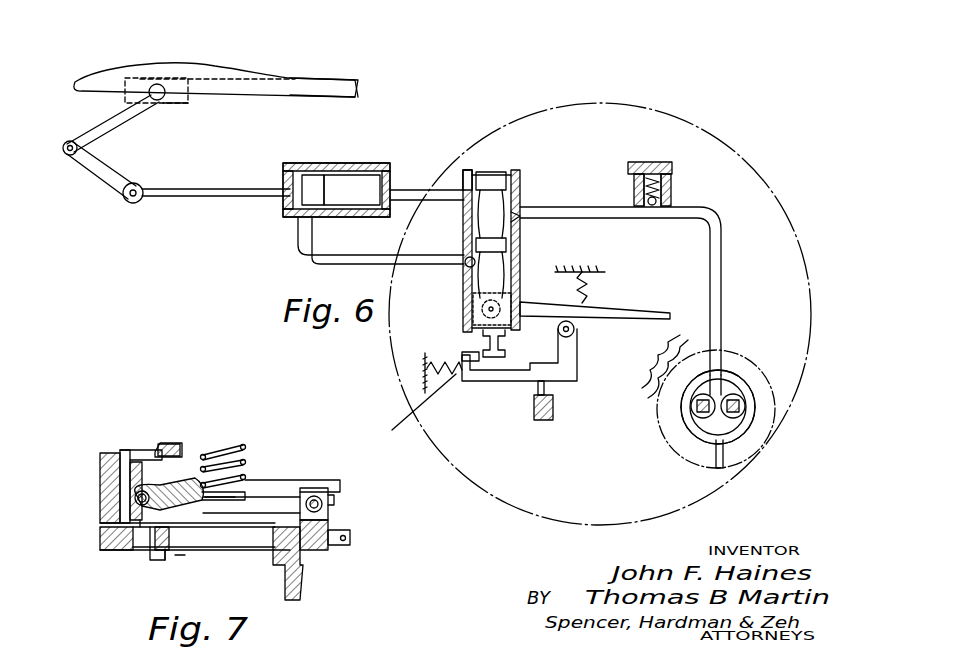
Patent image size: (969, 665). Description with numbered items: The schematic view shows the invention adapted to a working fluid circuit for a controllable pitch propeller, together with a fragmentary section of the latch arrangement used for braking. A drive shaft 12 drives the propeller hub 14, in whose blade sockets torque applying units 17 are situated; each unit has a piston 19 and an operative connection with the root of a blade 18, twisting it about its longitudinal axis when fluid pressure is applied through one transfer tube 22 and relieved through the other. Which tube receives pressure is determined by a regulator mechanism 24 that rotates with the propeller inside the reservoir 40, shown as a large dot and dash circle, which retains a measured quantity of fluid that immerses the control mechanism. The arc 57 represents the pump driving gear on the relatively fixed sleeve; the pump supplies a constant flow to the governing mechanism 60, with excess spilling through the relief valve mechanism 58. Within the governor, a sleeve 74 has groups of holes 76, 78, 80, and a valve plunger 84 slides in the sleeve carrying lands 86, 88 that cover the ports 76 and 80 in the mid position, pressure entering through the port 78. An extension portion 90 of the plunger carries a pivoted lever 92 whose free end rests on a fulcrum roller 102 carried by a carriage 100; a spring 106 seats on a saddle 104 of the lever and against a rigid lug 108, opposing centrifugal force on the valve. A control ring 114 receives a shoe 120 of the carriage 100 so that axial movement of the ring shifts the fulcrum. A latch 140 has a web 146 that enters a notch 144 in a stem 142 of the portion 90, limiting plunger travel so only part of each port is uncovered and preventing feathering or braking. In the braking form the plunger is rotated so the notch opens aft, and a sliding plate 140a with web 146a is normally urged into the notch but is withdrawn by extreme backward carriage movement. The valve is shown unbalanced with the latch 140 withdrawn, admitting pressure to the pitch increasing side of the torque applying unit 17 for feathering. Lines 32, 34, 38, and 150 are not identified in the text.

In FIG. 6, the drive shaft 12 is at (325, 80).
In FIG. 6, the propeller hub 14 is at (164, 104).
In FIG. 7, the propeller hub 14 is at (345, 525).
In FIG. 6, the torque applying unit 17 is at (360, 164).
In FIG. 6, the blade 18 is at (105, 80).
In FIG. 6, the piston 19 is at (316, 178).
In FIG. 6, the transfer tube 22 is at (408, 190).
In FIG. 6, the regulator mechanism 24 is at (795, 225).
In FIG. 6, the conduit 32 is at (435, 264).
In FIG. 6, the conduit 34 is at (437, 200).
In FIG. 7, the rod 38 is at (247, 548).
In FIG. 6, the reservoir 40 is at (712, 150).
In FIG. 6, the toothed flange 57 is at (676, 336).
In FIG. 6, the pressure relief means 58 is at (678, 196).
In FIG. 6, the pressure distributing means 60 is at (620, 291).
In FIG. 6, the sleeve 74 is at (520, 176).
In FIG. 6, the ports 76 is at (465, 280).
In FIG. 6, the ports 78 is at (520, 226).
In FIG. 6, the ports 80 is at (484, 180).
In FIG. 6, the valve plunger 84 is at (521, 200).
In FIG. 7, the valve plunger 84 is at (143, 455).
In FIG. 6, the land 86 is at (475, 245).
In FIG. 6, the land 88 is at (505, 172).
In FIG. 6, the portion 90 is at (514, 300).
In FIG. 6, the lever 92 is at (660, 313).
In FIG. 6, the carriage 100 is at (573, 382).
In FIG. 7, the carriage 100 is at (305, 565).
In FIG. 6, the fulcrum roller 102 is at (575, 331).
In FIG. 7, the saddle 104 is at (180, 478).
In FIG. 6, the spring 106 is at (590, 287).
In FIG. 7, the spring 106 is at (253, 456).
In FIG. 6, the lug 108 is at (600, 266).
In FIG. 6, the control ring 114 is at (545, 420).
In FIG. 6, the shoe 120 is at (538, 388).
In FIG. 6, the latch 140 is at (468, 386).
In FIG. 7, the sliding plate 140a is at (210, 528).
In FIG. 6, the stem 142 is at (506, 345).
In FIG. 6, the notch 144 is at (483, 345).
In FIG. 6, the web 146 is at (462, 355).
In FIG. 7, the web 146a is at (152, 540).
In FIG. 6, the housing 150 is at (417, 410).